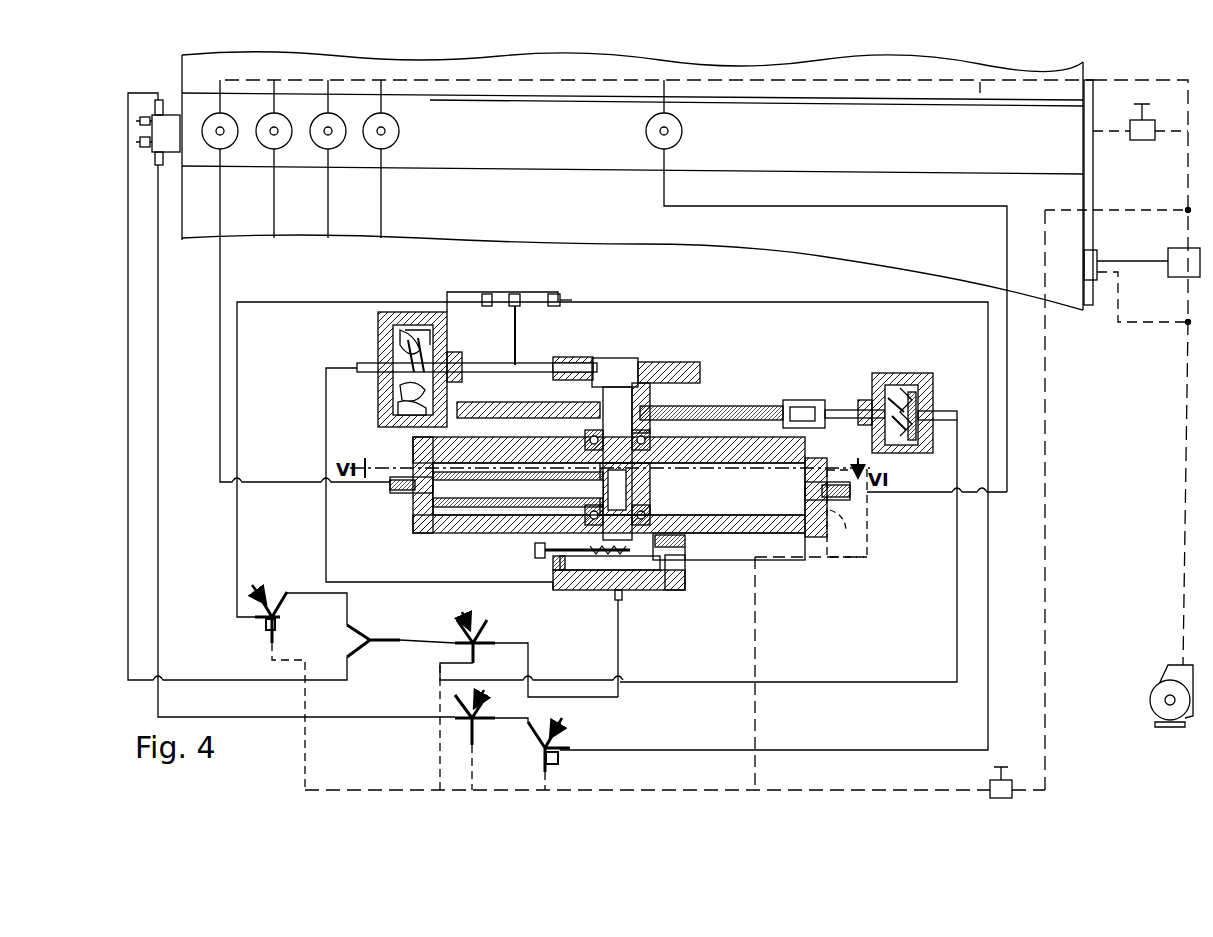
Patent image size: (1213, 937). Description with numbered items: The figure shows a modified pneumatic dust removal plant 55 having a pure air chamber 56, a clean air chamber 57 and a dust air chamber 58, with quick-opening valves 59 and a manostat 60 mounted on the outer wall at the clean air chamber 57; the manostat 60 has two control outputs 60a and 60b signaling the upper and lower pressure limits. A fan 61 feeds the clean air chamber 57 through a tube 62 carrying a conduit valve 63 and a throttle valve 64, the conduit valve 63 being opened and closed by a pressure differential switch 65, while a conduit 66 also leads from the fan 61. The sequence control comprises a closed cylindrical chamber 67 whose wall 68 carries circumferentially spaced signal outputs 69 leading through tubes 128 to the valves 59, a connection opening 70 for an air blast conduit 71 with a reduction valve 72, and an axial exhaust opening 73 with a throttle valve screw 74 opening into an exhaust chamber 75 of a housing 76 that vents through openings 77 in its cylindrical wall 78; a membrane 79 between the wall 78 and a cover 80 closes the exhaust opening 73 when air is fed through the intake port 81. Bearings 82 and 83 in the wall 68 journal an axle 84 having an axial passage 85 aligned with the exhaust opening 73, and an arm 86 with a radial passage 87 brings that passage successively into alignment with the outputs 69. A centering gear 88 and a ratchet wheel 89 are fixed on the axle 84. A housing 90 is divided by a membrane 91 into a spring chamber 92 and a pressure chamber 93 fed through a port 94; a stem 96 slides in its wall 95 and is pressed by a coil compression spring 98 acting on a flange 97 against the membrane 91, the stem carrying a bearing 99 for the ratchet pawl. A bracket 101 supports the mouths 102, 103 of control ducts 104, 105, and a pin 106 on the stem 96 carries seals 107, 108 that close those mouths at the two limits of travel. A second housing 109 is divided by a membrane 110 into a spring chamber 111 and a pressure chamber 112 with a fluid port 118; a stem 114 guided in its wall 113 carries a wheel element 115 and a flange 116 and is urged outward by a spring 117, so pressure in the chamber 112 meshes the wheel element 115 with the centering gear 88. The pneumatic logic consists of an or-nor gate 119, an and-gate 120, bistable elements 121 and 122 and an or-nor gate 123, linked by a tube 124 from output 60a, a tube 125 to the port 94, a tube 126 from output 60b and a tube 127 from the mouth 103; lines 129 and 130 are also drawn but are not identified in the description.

The pneumatic dust removal plant 55 is at (178, 206).
The pure air chamber 56 is at (878, 84).
The clean air chamber 57 is at (871, 140).
The dust air chamber 58 is at (906, 240).
The quick-opening valves 59 is at (366, 140).
The manostat 60 is at (140, 125).
The control output 60a is at (155, 105).
The control output 60b is at (155, 158).
The fan 61 is at (1150, 706).
The conduit or tube 62 is at (1186, 462).
The conduit valve 63 is at (1186, 250).
The throttle valve 64 is at (1148, 140).
The pressure differential switch 65 is at (1098, 258).
The conduit 66 is at (980, 93).
The closed cylindrical chamber 67 is at (812, 538).
The chamber wall 68 is at (850, 540).
The signal outputs 69 is at (392, 490).
The connection opening 70 is at (760, 550).
The air blast conduit 71 is at (756, 708).
The reduction valve 72 is at (996, 786).
The axial exhaust opening 73 is at (636, 592).
The throttle valve screw 74 is at (540, 556).
The exhaust chamber 75 is at (678, 592).
The housing 76 is at (590, 592).
The openings 77 is at (688, 565).
The cylindrical wall 78 is at (686, 544).
The membrane 79 is at (553, 576).
The cover 80 is at (556, 592).
The ventilation intake port 81 is at (615, 598).
The bearing 82 is at (619, 489).
The bearing 83 is at (652, 512).
The rotatable axle 84 is at (690, 400).
The axial passage 85 is at (560, 512).
The arm 86 is at (452, 512).
The radial passage 87 is at (433, 500).
The centering gear 88 is at (738, 406).
The ratchet wheel 89 is at (656, 368).
The cylindrical housing 90 is at (376, 322).
The membrane 91 is at (400, 410).
The spring chamber 92 is at (428, 328).
The pressure chamber 93 is at (404, 328).
The port 94 is at (365, 368).
The wall 95 is at (450, 356).
The stem 96 is at (566, 360).
The flange 97 is at (398, 392).
The coil compression spring 98 is at (410, 338).
The bearing 99 is at (612, 362).
The bracket 101 is at (462, 292).
The mouth 102 is at (487, 294).
The mouth 103 is at (566, 298).
The control duct 104 is at (318, 302).
The control duct 105 is at (684, 302).
The pin 106 is at (517, 360).
The seal 107 is at (516, 294).
The seal 108 is at (553, 294).
The housing 109 is at (902, 388).
The membrane 110 is at (918, 402).
The spring chamber 111 is at (918, 392).
The pressure chamber 112 is at (930, 448).
The wall 113 is at (886, 373).
The stem 114 is at (838, 410).
The wheel element 115 is at (796, 406).
The flange 116 is at (930, 434).
The coil compression spring 117 is at (910, 446).
The fluid port 118 is at (930, 412).
The or-nor gate 119 is at (314, 638).
The and-gate 120 is at (398, 670).
The bistable element 121 is at (456, 612).
The bistable element 122 is at (512, 766).
The or-nor gate 123 is at (608, 738).
The tube 124 is at (128, 480).
The tube 125 is at (326, 544).
The tube 126 is at (158, 545).
The tube 127 is at (988, 700).
The tubes 128 is at (1030, 212).
The line 129 is at (850, 528).
The valve block 130 is at (846, 557).